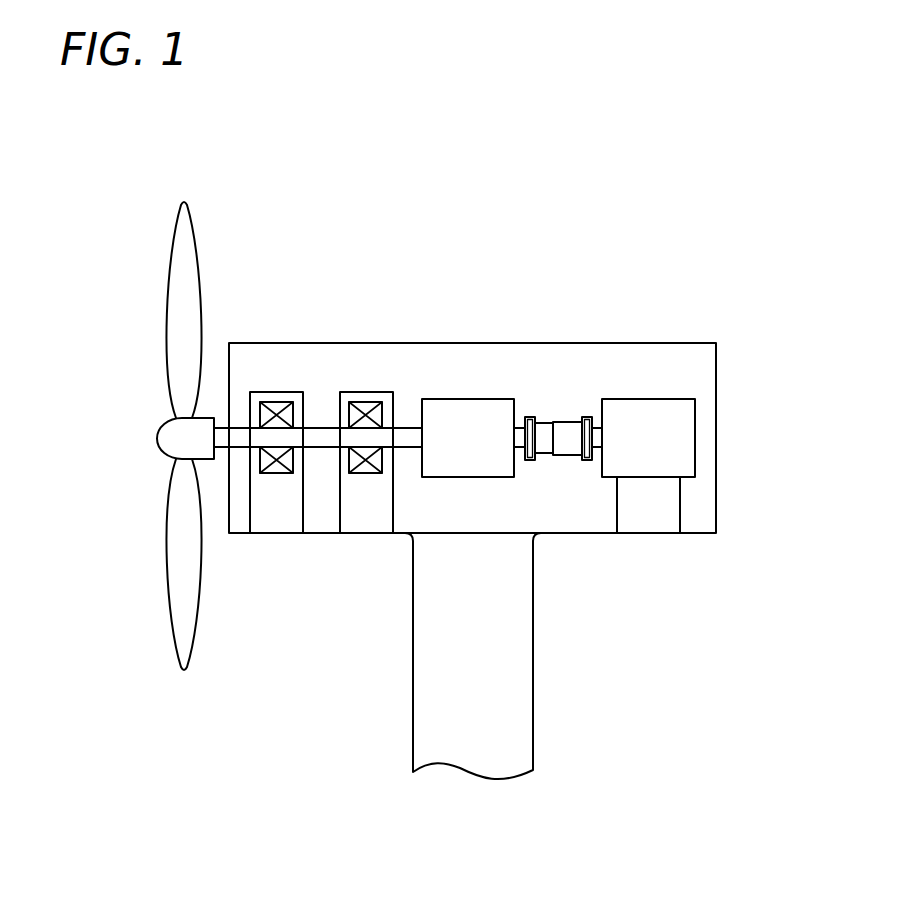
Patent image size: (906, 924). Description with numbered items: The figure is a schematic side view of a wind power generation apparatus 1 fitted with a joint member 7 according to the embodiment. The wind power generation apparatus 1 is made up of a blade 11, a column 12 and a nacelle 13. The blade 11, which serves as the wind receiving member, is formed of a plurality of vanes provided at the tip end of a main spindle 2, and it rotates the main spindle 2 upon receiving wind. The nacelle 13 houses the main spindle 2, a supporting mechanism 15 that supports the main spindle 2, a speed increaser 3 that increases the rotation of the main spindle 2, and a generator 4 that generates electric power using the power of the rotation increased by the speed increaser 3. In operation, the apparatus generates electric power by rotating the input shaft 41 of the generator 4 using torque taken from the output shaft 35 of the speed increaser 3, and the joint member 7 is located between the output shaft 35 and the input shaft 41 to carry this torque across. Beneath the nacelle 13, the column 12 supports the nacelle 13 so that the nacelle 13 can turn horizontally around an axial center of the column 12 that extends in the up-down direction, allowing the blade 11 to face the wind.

The wind power generation apparatus 1 is at (715, 230).
The blade 11 is at (174, 268).
The supporting mechanism 15 is at (287, 361).
The main spindle 2 is at (323, 428).
The nacelle 13 is at (457, 343).
The speed increaser 3 is at (488, 407).
The joint member 7 is at (572, 405).
The generator 4 is at (637, 408).
The output shaft 35 is at (520, 452).
The input shaft 41 is at (597, 452).
The column 12 is at (525, 655).